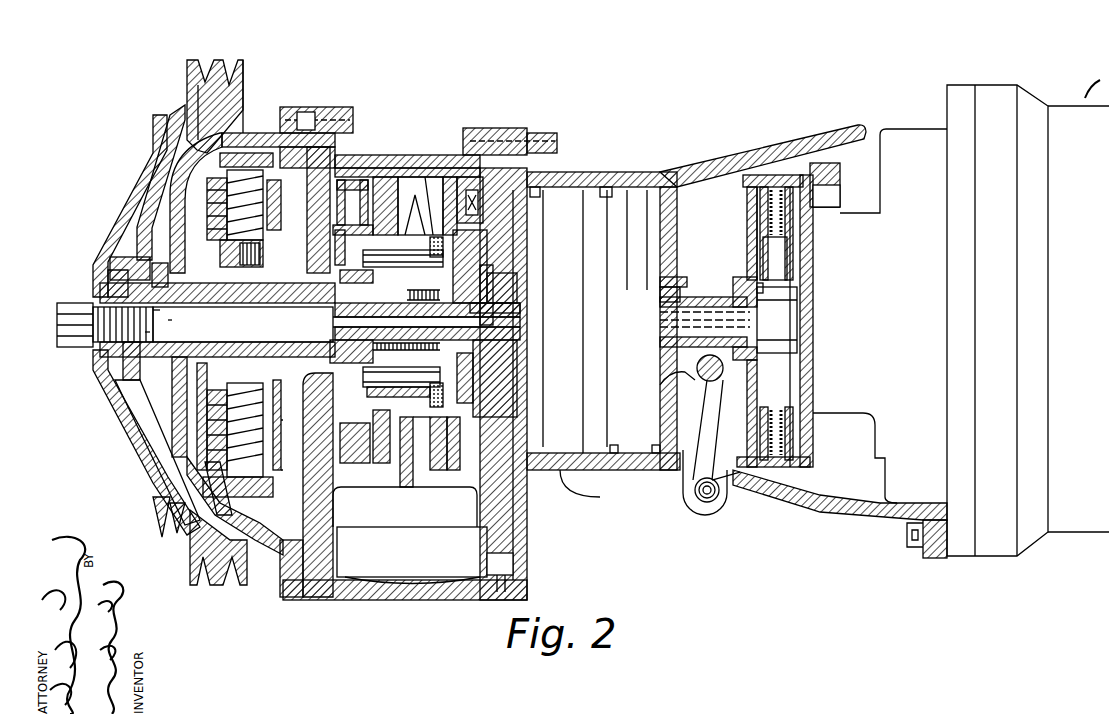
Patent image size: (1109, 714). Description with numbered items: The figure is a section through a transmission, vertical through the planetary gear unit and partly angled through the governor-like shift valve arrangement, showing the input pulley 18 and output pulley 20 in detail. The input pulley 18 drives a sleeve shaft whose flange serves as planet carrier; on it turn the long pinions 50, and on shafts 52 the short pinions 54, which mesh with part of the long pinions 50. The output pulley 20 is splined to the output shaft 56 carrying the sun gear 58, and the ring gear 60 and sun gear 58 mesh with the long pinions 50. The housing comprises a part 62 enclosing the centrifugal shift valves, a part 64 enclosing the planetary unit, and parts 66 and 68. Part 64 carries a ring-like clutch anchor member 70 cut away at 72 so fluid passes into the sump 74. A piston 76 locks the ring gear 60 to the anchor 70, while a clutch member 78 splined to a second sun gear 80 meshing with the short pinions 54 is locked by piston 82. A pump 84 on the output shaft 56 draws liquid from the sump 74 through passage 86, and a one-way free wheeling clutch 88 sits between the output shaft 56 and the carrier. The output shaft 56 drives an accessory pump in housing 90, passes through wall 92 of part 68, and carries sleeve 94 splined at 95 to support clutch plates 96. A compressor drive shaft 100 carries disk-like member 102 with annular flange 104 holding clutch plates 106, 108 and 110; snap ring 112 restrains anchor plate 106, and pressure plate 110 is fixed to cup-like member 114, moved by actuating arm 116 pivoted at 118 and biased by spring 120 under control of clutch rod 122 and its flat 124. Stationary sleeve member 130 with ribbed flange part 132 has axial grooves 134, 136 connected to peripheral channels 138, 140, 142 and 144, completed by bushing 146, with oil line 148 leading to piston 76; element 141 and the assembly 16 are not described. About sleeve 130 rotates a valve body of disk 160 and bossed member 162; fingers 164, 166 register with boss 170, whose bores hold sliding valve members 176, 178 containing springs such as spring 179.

The clutch assembly 16 is at (390, 170).
The input pulley 18 is at (237, 107).
The output pulley 20 is at (153, 133).
The long pinions 50 is at (450, 178).
The shafts 52 is at (376, 448).
The short pinions 54 is at (415, 470).
The output shaft 56 is at (665, 330).
The sun gear 58 is at (372, 292).
The ring gear 60 is at (385, 185).
The housing part 62 is at (247, 135).
The housing part 64 is at (470, 178).
The housing part 66 is at (522, 233).
The housing part 68 is at (655, 178).
The clutch anchor member 70 is at (418, 183).
The cut-away part 72 is at (430, 472).
The sump 74 is at (440, 583).
The piston 76 is at (345, 180).
The clutch member 78 is at (495, 132).
The second sun gear 80 is at (488, 280).
The piston 82 is at (480, 197).
The pump 84 is at (513, 297).
The passage 86 is at (515, 545).
The one-way free wheeling clutch 88 is at (310, 320).
The liquid pump housing 90 is at (600, 174).
The wall 92 is at (677, 265).
The sleeve 94 is at (735, 292).
The external splines 95 is at (742, 280).
The clutch plates 96 is at (800, 252).
The drive shaft 100 is at (815, 300).
The disk-like member 102 is at (813, 270).
The annular flange 104 is at (823, 163).
The clutch plate 106 is at (748, 225).
The clutch plate 108 is at (770, 183).
The clutch plate 110 is at (805, 220).
The snap ring 112 is at (165, 262).
The cup-like member 114 is at (755, 178).
The actuating arm 116 is at (712, 425).
The pivot 118 is at (705, 497).
The spring 120 is at (735, 486).
The clutch rod 122 is at (668, 382).
The flat 124 is at (712, 380).
The stationary sleeve member 130 is at (300, 262).
The ribbed flange part 132 is at (310, 118).
The axial groove 134 is at (312, 250).
The axial groove 136 is at (252, 416).
The peripheral channel 138 is at (148, 315).
The peripheral channel 140 is at (157, 332).
The ring 141 is at (293, 418).
The peripheral channel 142 is at (181, 317).
The peripheral channel 144 is at (145, 372).
The bushing 146 is at (342, 222).
The oil line 148 is at (405, 245).
The disk 160 is at (122, 324).
The bossed member 162 is at (280, 480).
The finger 164 is at (189, 182).
The finger 166 is at (270, 498).
The boss 170 is at (200, 197).
The sliding valve member 176 is at (258, 185).
The sliding valve member 178 is at (262, 493).
The spring 179 is at (293, 471).